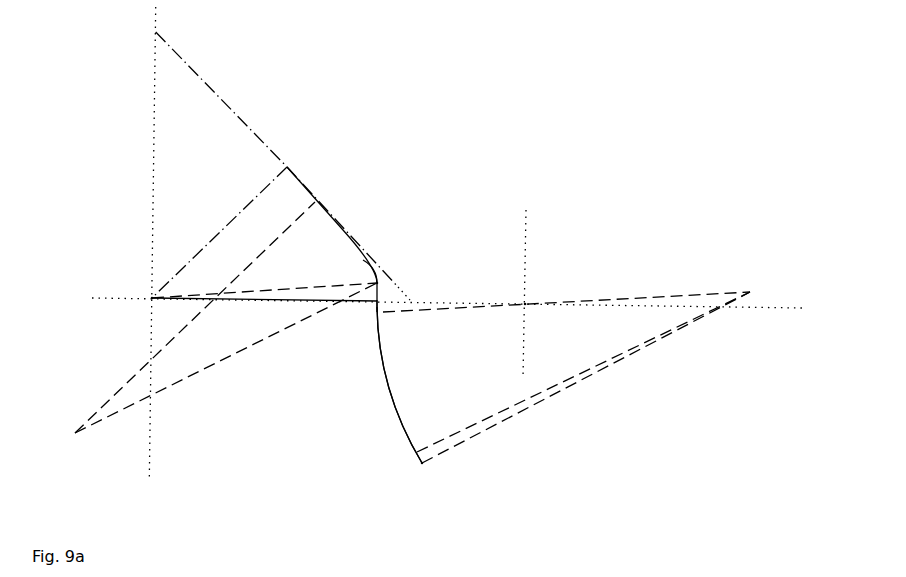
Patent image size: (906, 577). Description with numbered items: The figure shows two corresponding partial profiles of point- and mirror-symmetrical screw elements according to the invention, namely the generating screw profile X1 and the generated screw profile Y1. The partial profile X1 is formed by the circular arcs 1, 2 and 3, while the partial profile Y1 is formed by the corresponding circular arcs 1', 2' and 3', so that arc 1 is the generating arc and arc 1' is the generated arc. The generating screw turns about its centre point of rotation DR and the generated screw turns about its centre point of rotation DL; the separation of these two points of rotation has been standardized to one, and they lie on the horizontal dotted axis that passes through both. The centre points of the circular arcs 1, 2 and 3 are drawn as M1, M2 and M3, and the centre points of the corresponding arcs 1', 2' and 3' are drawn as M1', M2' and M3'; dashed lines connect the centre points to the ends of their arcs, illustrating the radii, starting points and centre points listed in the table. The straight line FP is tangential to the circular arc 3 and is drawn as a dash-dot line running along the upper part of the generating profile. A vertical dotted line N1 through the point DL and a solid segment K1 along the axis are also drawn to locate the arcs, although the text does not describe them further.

The circular arc 1 is at (386, 295).
The circular arc 2 is at (408, 265).
The circular arc 3 is at (332, 225).
The corresponding circular arc 1' is at (355, 322).
The corresponding circular arc 2' is at (393, 385).
The corresponding circular arc 3' is at (410, 470).
The centre point of circular arc M1 is at (264, 290).
The centre point of circular arc M2 is at (376, 282).
The centre point of circular arc M3 is at (210, 326).
The centre point of circular arc M1' is at (524, 303).
The centre point of circular arc M2' is at (581, 297).
The centre point of circular arc M3' is at (583, 383).
The normal axis N1 is at (144, 243).
The centre point of rotation of the generated screw DL is at (146, 295).
The centre point of rotation of the generating screw DR is at (530, 298).
The straight line FP is at (283, 166).
The generating screw profile X1 is at (236, 203).
The generated screw profile Y1 is at (402, 385).
The distance K1 is at (264, 312).